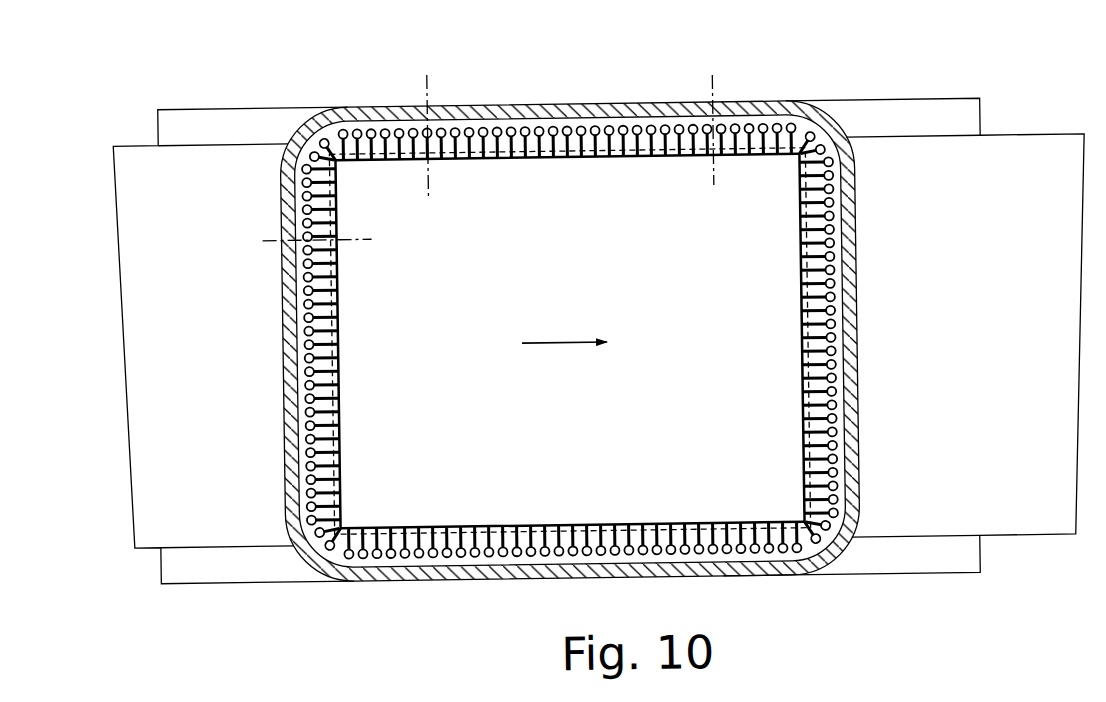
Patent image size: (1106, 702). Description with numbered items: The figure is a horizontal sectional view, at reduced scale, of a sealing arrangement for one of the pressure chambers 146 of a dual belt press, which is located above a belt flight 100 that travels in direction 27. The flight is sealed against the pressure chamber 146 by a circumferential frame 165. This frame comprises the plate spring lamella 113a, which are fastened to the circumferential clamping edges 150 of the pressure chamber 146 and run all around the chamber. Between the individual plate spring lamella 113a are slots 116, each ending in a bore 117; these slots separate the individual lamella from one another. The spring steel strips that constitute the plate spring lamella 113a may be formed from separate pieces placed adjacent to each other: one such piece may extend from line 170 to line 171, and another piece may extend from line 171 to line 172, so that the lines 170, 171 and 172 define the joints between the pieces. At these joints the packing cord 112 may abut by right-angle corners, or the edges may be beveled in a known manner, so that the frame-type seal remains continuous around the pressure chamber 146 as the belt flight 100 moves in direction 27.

The belt flight 100 is at (601, 308).
The circumferential clamping edges 150 is at (634, 340).
The circumferential frame 165 is at (797, 612).
The pressure chamber 146 is at (569, 341).
The packing cord 112 is at (572, 504).
The plate spring lamella 113a is at (763, 277).
The slots 116 is at (775, 386).
The bores 117 is at (882, 316).
The line 170 is at (371, 226).
The line 171 is at (484, 126).
The line 172 is at (779, 118).
The direction 27 is at (565, 378).